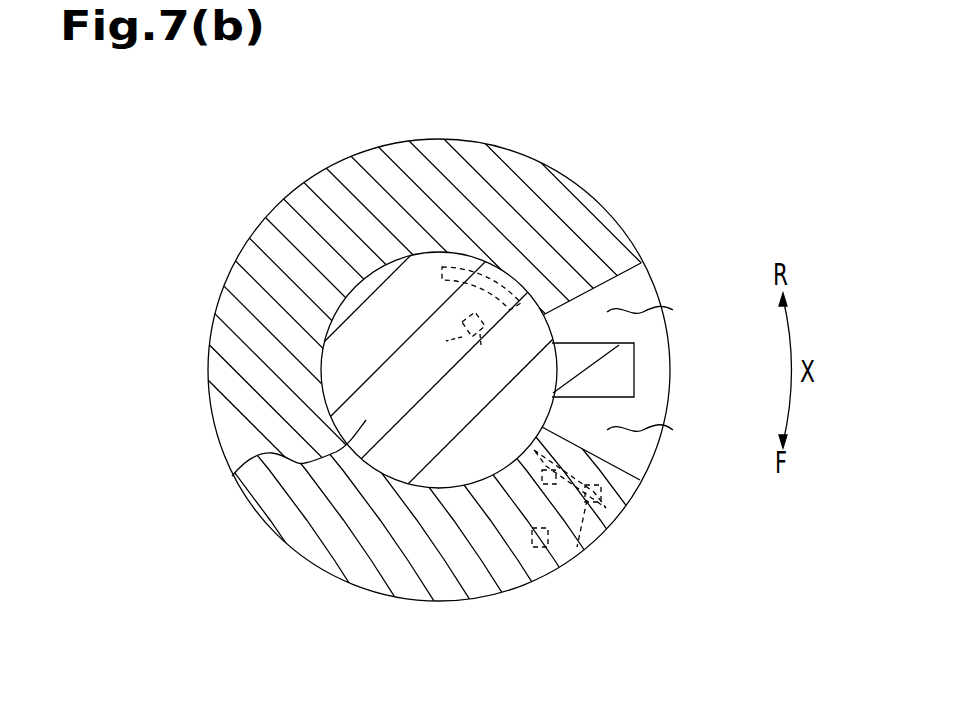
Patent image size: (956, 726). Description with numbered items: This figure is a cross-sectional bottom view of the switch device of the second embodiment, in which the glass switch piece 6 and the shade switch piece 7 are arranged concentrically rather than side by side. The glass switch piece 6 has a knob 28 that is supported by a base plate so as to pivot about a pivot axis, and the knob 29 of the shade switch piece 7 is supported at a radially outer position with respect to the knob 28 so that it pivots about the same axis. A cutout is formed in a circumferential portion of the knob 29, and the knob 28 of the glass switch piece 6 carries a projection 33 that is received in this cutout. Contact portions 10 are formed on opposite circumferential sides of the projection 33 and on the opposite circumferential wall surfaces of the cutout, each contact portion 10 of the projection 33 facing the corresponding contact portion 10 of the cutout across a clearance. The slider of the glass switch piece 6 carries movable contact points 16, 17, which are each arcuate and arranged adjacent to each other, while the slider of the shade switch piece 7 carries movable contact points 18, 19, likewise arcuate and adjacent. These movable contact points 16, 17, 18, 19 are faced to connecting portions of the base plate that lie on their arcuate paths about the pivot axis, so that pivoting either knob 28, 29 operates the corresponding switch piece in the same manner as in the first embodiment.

The glass switch piece 6 is at (414, 276).
The shade switch piece 7 is at (382, 600).
The contact portions 10 is at (641, 266).
The movable contact point 16 is at (463, 334).
The movable contact point 17 is at (441, 272).
The movable contact point 18 is at (545, 442).
The movable contact point 19 is at (579, 546).
The knob 28 is at (238, 470).
The knob 29 is at (283, 207).
The projection 33 is at (594, 373).